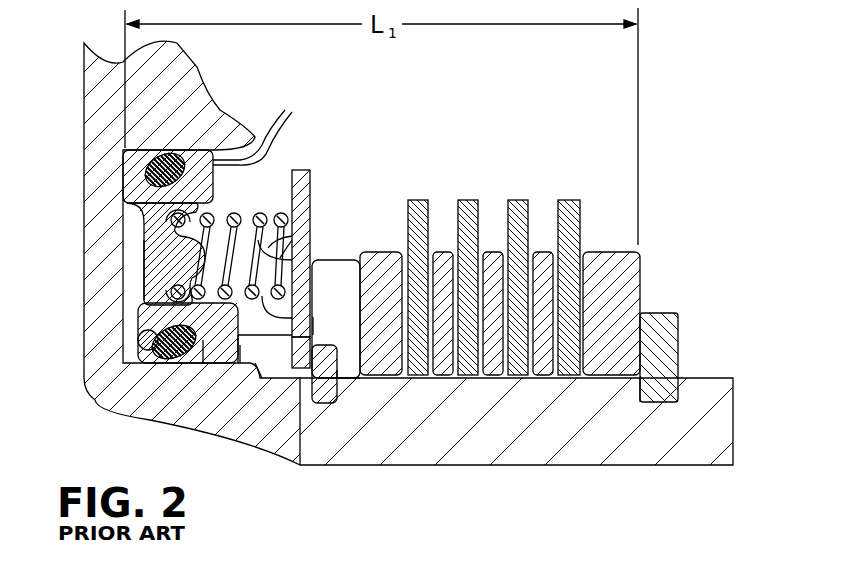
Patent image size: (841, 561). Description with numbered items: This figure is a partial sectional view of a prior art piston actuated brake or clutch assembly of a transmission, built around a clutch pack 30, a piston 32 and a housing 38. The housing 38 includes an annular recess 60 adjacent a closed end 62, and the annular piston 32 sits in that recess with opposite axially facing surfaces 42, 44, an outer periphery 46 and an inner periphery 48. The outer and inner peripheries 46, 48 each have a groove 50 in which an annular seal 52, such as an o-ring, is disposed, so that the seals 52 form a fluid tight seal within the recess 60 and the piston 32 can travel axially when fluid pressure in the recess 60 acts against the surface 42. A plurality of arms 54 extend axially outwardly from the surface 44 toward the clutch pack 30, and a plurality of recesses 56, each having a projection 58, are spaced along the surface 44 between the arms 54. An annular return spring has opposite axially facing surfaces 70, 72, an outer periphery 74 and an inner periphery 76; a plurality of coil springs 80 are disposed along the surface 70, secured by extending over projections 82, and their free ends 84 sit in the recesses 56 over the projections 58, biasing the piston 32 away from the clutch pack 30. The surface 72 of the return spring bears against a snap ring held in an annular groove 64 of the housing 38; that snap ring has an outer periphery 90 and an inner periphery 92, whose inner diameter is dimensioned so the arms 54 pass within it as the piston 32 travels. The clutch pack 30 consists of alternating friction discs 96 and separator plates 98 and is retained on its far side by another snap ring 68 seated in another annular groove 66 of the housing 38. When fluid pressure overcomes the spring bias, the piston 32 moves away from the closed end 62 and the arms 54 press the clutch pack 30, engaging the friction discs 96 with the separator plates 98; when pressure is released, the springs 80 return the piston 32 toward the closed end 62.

The clutch pack 30 is at (492, 166).
The piston 32 is at (157, 255).
The housing 38 is at (720, 437).
The axially facing surface 42 is at (125, 163).
The axially facing surface 44 is at (220, 172).
The outer periphery 46 is at (203, 365).
The inner periphery 48 is at (160, 175).
The groove 50 is at (150, 182).
The annular seal 52 is at (170, 150).
The arm 54 is at (362, 253).
The recess 56 is at (228, 188).
The projection 58 is at (240, 365).
The annular recess 60 is at (215, 158).
The closed end 62 is at (118, 303).
The annular groove 64 is at (333, 380).
The annular groove 66 is at (662, 402).
The snap ring 68 is at (680, 343).
The axially facing surface 70 is at (262, 378).
The axially facing surface 72 is at (313, 317).
The outer periphery 74 is at (303, 345).
The inner periphery 76 is at (302, 170).
The spring 80 is at (340, 267).
The projection 82 is at (312, 210).
The free end 84 is at (153, 287).
The outer periphery 90 is at (314, 390).
The inner periphery 92 is at (337, 370).
The friction disc 96 is at (542, 372).
The separator plate 98 is at (520, 200).